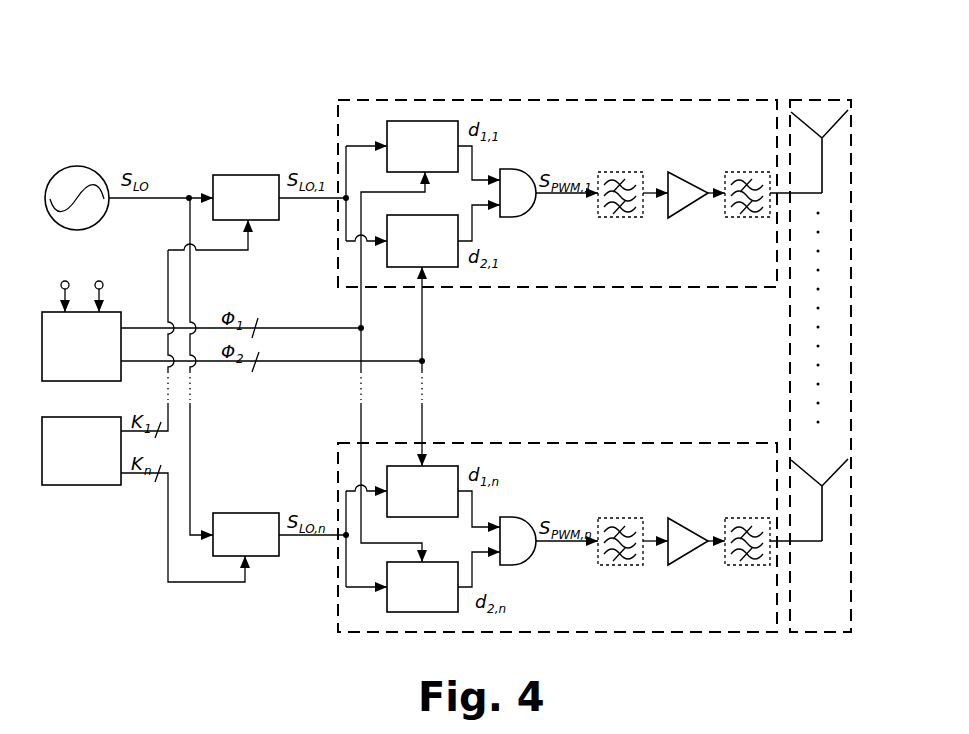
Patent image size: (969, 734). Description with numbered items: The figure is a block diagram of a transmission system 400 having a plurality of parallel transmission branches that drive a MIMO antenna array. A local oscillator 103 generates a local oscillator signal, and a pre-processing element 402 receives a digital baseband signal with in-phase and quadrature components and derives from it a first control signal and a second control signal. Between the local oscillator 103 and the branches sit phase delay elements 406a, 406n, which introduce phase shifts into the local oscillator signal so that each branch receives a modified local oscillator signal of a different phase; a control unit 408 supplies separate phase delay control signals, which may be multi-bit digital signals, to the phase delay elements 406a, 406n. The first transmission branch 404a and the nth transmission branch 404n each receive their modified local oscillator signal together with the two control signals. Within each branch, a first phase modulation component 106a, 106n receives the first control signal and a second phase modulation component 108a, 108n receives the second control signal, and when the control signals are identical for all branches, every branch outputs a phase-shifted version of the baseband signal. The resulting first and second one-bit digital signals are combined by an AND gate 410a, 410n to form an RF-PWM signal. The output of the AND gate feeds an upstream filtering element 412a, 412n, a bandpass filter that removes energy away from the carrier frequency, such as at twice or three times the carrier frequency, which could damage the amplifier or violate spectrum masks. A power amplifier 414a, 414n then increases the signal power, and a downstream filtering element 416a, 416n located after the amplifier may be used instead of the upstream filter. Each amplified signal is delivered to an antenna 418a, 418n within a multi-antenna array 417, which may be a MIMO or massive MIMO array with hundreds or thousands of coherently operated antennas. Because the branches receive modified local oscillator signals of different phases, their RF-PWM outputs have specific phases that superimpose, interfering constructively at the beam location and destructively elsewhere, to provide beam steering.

The transmission system 400 is at (128, 54).
The local oscillator 103 is at (77, 164).
The pre-processing element 402 is at (63, 360).
The control unit 408 is at (63, 464).
The phase delay element 406a is at (224, 208).
The phase delay element 406n is at (224, 545).
The first phase modulation component 106a is at (446, 157).
The second phase modulation component 108a is at (446, 251).
The first phase modulation component 106n is at (446, 502).
The second phase modulation component 108n is at (446, 597).
The AND gate 410a is at (516, 168).
The AND gate 410n is at (516, 516).
The upstream filtering element 412a is at (621, 219).
The upstream filtering element 412n is at (621, 567).
The power amplifier 414a is at (680, 172).
The power amplifier 414n is at (675, 518).
The downstream filtering element 416a is at (748, 219).
The downstream filtering element 416n is at (748, 567).
The first transmission branch 404a is at (703, 99).
The nth transmission branch 404n is at (703, 442).
The multi-antenna array 417 is at (836, 99).
The antenna 418a is at (838, 148).
The antenna 418n is at (838, 496).